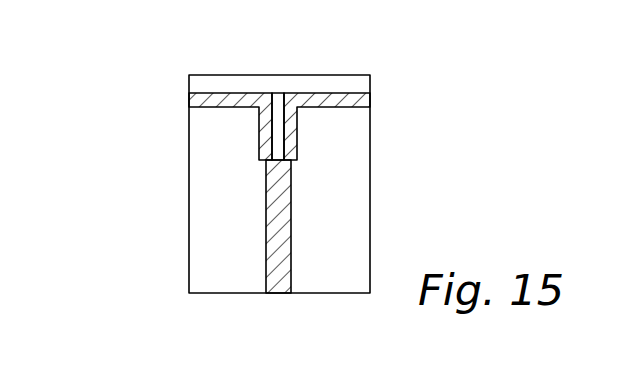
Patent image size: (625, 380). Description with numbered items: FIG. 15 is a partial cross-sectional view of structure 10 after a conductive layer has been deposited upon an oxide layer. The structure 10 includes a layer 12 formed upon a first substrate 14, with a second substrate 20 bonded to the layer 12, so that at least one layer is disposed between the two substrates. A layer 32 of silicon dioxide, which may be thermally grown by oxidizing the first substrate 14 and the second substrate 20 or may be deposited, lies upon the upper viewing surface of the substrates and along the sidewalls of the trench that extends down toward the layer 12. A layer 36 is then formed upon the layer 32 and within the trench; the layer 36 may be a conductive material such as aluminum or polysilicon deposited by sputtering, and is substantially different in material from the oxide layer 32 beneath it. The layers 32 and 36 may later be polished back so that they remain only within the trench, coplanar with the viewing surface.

The structure 10 is at (152, 98).
The layer 12 is at (277, 202).
The first substrate 14 is at (243, 285).
The second substrate 20 is at (352, 285).
The layer 32 is at (225, 100).
The layer 36 is at (297, 85).